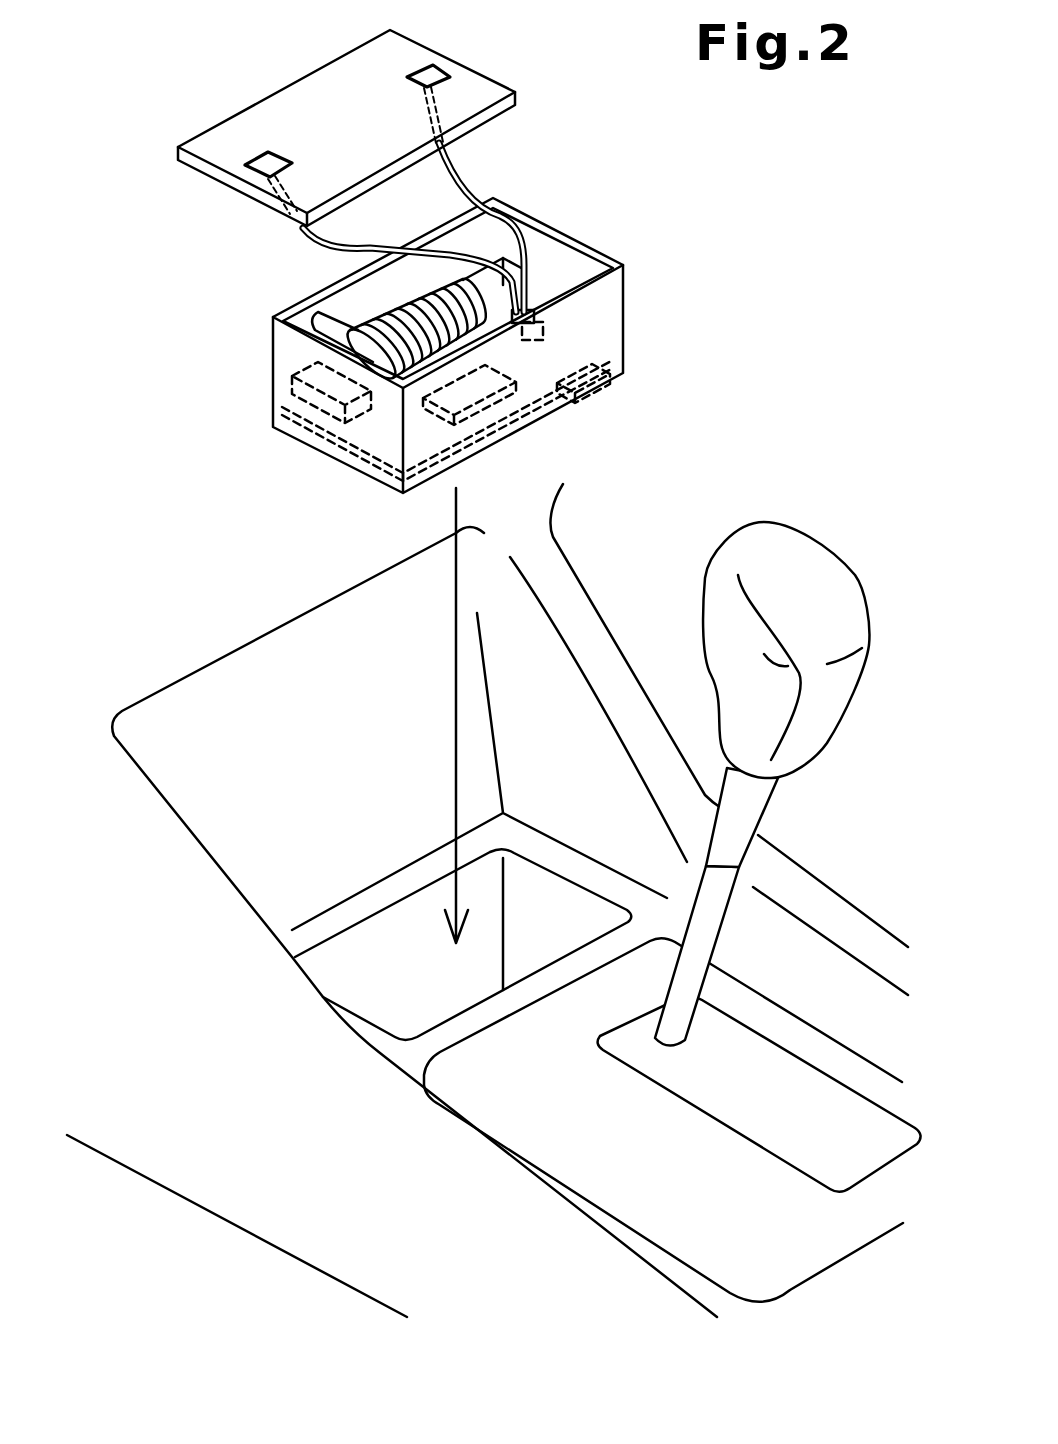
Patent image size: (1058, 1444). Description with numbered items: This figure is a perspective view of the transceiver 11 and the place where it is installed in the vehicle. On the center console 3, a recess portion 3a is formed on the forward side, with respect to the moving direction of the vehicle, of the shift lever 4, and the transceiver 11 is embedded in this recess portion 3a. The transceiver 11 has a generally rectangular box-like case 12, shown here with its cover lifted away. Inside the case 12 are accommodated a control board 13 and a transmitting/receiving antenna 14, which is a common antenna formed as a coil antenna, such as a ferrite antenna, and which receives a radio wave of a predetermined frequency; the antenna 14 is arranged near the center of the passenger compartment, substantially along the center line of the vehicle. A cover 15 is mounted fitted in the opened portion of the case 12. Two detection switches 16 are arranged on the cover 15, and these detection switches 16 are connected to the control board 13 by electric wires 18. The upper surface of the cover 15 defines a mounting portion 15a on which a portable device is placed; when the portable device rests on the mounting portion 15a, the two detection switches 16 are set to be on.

The center console 3 is at (383, 1055).
The recess portion 3a is at (357, 953).
The shift lever 4 is at (858, 622).
The transceiver 11 is at (620, 172).
The case 12 is at (614, 303).
The control board 13 is at (583, 393).
The transmitting/receiving antenna 14 is at (342, 350).
The cover 15 is at (493, 97).
The mounting portion 15a is at (308, 100).
The detection switches 16 is at (433, 67).
The electric wires 18 is at (341, 230).